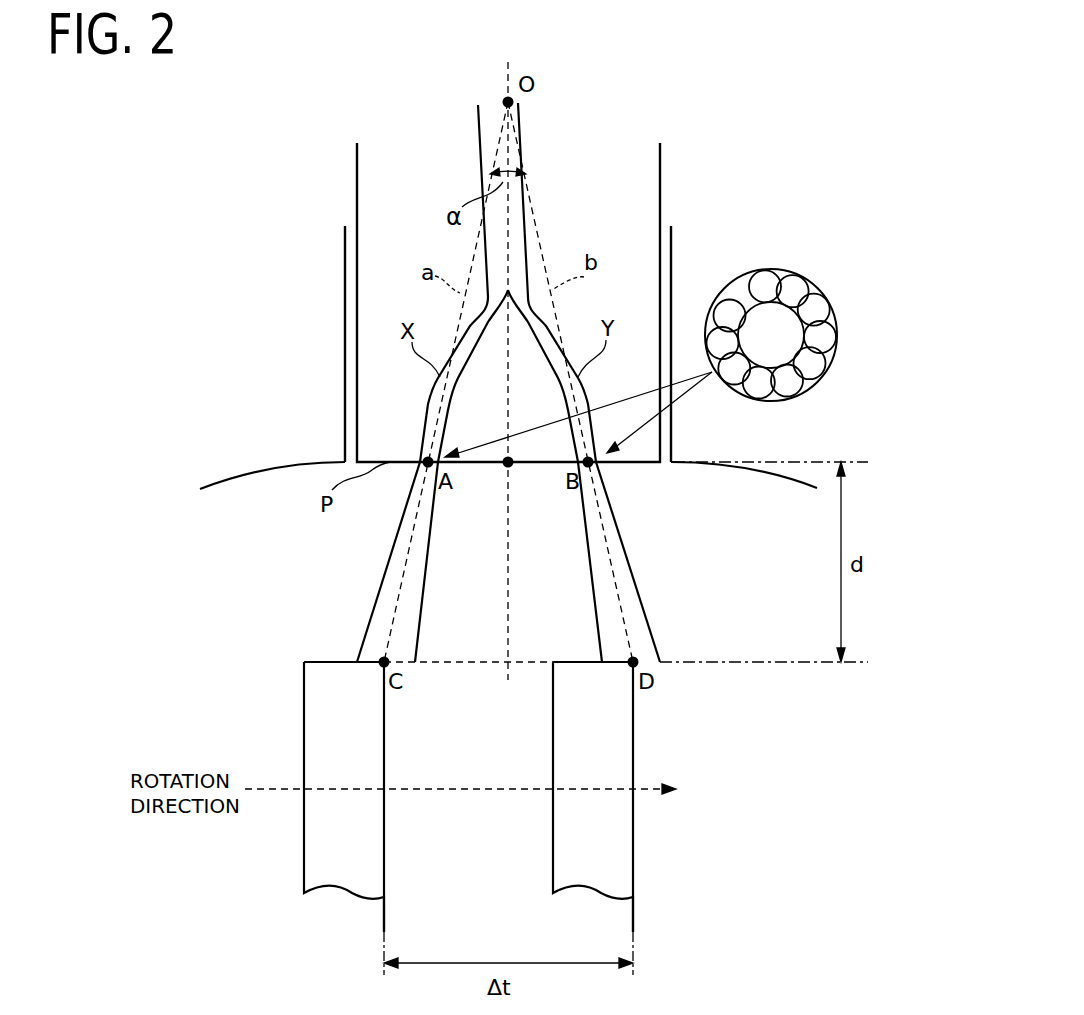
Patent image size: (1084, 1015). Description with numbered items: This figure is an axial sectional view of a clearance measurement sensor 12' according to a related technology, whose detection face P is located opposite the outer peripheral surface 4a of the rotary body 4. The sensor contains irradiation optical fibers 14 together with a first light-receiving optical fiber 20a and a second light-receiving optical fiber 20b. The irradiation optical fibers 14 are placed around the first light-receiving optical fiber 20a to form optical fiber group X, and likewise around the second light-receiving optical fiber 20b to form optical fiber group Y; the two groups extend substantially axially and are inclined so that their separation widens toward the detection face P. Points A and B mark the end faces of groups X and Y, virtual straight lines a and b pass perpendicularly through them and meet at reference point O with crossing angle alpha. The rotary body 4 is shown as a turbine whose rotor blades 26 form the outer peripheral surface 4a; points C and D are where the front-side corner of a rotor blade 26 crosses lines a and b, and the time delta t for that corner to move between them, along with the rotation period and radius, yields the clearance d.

The clearance measurement sensor 12' is at (593, 382).
The irradiation optical fibers 14 is at (697, 346).
The first light-receiving optical fiber 20a is at (829, 334).
The second light-receiving optical fiber 20b is at (797, 335).
The rotary body 4 is at (550, 764).
The outer peripheral surface 4a is at (702, 654).
The rotor blades 26 is at (385, 850).